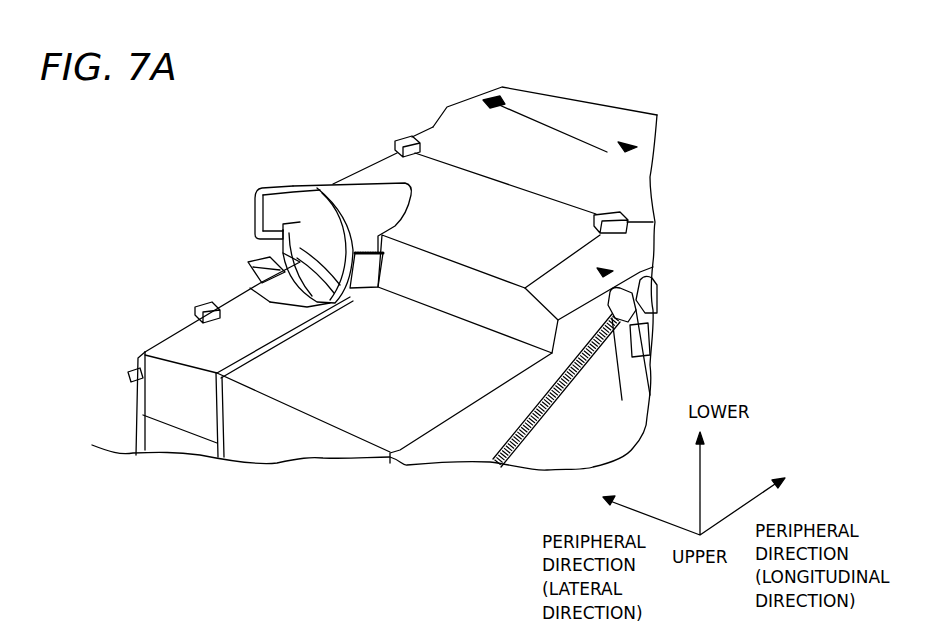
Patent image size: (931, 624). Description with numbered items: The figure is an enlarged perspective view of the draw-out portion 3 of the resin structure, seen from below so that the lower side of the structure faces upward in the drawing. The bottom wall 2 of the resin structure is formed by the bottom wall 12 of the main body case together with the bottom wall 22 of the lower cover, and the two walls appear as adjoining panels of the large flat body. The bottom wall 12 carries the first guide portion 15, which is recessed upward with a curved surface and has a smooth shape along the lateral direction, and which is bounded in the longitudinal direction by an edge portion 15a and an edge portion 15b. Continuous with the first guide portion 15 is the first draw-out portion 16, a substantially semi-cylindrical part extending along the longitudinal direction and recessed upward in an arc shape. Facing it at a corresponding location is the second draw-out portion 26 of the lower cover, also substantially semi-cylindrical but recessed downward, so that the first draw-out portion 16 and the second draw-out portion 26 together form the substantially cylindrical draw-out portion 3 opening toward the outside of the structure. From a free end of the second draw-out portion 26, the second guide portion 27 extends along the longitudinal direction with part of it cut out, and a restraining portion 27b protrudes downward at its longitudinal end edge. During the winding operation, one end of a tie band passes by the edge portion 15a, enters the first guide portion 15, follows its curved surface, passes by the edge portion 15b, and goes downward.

The bottom wall 2 is at (268, 548).
The draw-out portion 3 is at (303, 80).
The bottom wall 12 is at (227, 354).
The bottom wall 22 is at (297, 388).
The first guide portion 15 is at (275, 278).
The edge portion 15a is at (258, 272).
The edge portion 15b is at (352, 302).
The first draw-out portion 16 is at (305, 249).
The second draw-out portion 26 is at (365, 198).
The second guide portion 27 is at (306, 186).
The restraining portion 27b is at (263, 193).